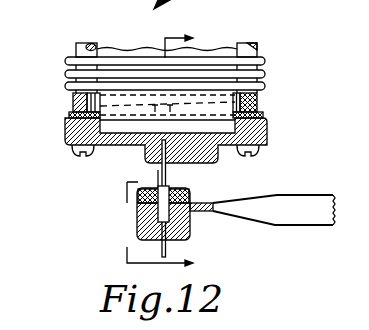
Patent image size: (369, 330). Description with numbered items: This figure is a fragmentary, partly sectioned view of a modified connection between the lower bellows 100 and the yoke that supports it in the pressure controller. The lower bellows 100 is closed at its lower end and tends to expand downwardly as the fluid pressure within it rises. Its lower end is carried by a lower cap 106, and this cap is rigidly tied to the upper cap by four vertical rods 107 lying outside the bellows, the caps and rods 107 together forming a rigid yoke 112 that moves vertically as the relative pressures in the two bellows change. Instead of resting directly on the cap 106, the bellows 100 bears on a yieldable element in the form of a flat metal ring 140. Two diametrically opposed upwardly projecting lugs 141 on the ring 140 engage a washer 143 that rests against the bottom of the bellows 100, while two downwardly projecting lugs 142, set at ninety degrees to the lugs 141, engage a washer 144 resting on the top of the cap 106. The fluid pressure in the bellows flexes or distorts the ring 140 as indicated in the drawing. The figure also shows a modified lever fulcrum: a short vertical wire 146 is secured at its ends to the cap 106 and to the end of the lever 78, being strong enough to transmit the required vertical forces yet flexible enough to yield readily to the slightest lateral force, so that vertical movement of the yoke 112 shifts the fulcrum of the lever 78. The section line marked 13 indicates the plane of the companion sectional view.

The section line 13- 13 is at (170, 153).
The lever 78 is at (295, 225).
The bellows 100 is at (266, 62).
The cap 106 is at (266, 137).
The vertical rods 107 is at (76, 50).
The yoke 112 is at (78, 134).
The flat metal ring 140 is at (263, 114).
The upwardly projecting lugs 141 is at (72, 100).
The downwardly projecting lugs 142 is at (180, 123).
The washer 143 is at (258, 97).
The washer 144 is at (70, 114).
The vertical wire 146 is at (160, 181).